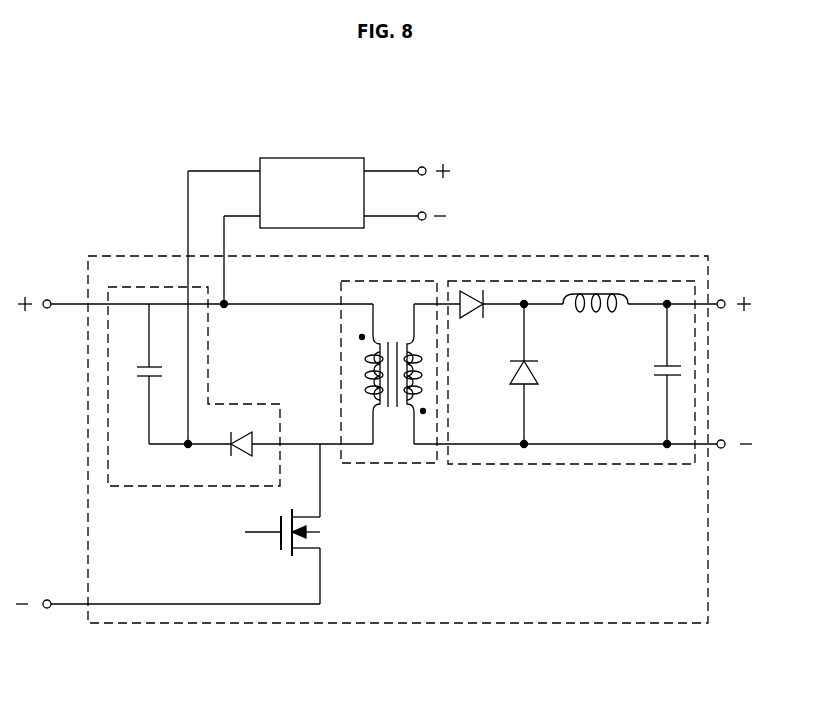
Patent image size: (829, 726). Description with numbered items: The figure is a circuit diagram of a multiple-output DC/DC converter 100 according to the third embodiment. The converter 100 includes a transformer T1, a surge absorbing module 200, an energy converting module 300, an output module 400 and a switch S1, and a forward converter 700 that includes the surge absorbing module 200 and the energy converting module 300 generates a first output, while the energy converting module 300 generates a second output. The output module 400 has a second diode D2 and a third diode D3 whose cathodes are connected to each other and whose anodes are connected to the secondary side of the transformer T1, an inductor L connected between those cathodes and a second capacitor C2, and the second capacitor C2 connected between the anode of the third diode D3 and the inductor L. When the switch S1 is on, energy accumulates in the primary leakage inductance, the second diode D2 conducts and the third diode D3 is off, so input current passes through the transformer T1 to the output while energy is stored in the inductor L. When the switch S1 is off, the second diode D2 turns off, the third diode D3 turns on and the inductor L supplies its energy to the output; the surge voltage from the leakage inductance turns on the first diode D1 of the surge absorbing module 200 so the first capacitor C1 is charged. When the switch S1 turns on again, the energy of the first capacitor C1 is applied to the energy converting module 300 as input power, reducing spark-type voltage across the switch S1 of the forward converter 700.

The multiple-output DC/DC converter 100 is at (114, 105).
The surge absorbing module 200 is at (193, 486).
The energy converting module 300 is at (311, 158).
The output module 400 is at (568, 464).
The forward converter 700 is at (384, 623).
The first capacitor C1 is at (136, 374).
The first diode D1 is at (302, 457).
The switch S1 is at (298, 524).
The transformer T1 is at (389, 372).
The second diode D2 is at (511, 317).
The third diode D3 is at (538, 374).
The inductor L is at (640, 318).
The second capacitor C2 is at (654, 374).